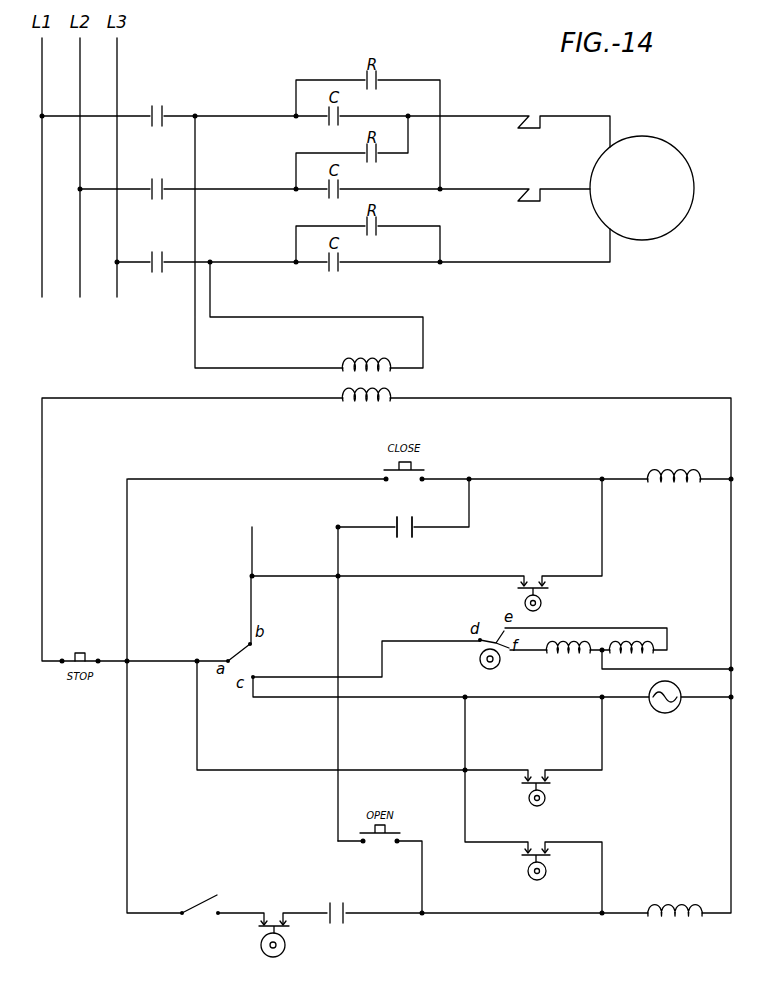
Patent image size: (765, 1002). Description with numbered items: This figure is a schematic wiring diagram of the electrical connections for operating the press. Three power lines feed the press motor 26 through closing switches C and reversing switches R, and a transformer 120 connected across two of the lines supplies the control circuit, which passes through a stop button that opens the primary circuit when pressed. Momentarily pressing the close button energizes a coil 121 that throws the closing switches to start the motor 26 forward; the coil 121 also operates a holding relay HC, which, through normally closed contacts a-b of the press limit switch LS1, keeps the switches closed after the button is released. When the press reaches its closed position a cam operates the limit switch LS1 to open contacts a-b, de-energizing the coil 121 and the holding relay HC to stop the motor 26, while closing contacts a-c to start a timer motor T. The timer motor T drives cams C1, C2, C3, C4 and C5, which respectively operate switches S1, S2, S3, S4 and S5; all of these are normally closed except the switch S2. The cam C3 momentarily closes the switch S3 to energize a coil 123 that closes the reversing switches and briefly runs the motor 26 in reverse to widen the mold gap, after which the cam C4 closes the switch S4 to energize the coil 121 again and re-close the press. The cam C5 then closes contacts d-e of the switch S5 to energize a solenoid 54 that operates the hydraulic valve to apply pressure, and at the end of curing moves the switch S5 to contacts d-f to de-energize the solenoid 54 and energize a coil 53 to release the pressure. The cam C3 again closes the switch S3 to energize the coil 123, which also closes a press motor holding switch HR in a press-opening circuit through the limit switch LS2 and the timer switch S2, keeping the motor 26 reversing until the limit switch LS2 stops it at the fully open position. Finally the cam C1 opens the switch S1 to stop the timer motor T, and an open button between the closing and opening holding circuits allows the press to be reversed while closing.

The press motor 26 is at (677, 163).
The transformer 120 is at (392, 383).
The coil 121 is at (676, 471).
The coil 123 is at (670, 921).
The coil 53 is at (562, 656).
The solenoid 54 is at (657, 655).
The timer motor T is at (683, 704).
The holding relay HC is at (405, 515).
The press motor holding switch HR is at (340, 897).
The press limit switch LS1 is at (230, 627).
The limit switch LS2 is at (193, 896).
The timer switch S1 is at (523, 781).
The timer switch S2 is at (261, 925).
The timer switch S3 is at (523, 851).
The timer switch S4 is at (519, 587).
The timer switch S5 is at (478, 642).
The timer cam C1 is at (529, 801).
The timer cam C2 is at (284, 953).
The timer cam C3 is at (530, 880).
The timer cam C4 is at (540, 609).
The timer cam C5 is at (487, 669).